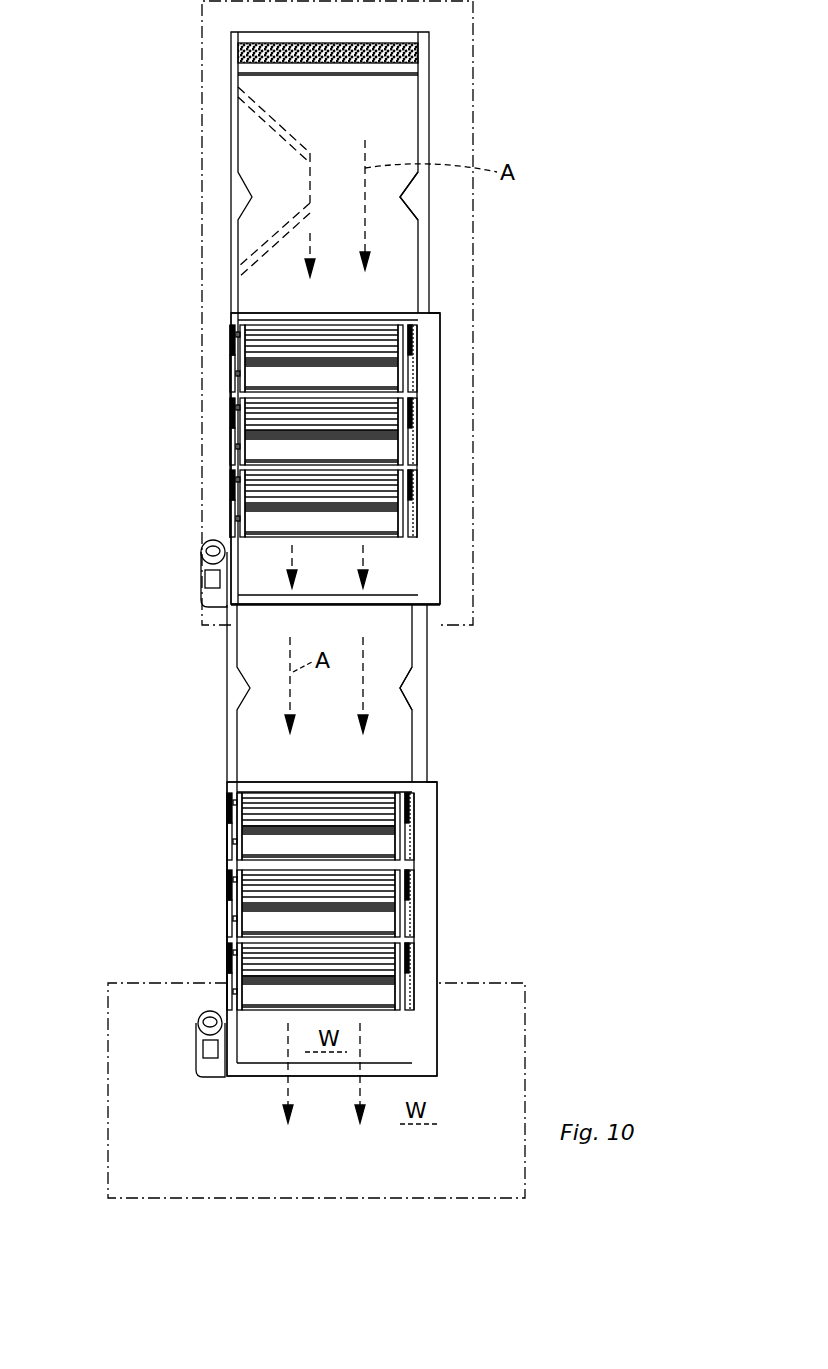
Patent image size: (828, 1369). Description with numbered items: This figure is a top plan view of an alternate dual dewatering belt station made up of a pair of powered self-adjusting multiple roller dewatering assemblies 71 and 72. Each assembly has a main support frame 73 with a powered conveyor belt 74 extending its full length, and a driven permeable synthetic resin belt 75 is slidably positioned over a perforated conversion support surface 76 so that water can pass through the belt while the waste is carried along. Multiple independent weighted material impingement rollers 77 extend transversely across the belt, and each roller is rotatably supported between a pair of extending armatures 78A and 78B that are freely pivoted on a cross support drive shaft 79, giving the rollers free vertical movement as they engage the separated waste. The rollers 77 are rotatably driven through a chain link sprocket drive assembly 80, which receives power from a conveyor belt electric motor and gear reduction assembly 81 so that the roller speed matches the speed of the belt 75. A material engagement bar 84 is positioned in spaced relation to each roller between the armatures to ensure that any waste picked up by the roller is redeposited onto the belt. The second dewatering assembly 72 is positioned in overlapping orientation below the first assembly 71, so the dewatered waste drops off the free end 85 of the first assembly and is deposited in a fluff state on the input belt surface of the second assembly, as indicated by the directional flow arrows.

The powered self-adjusting multiple roller dewatering assembly 71 is at (497, 336).
The second powered multiple roller dewatering assembly 72 is at (497, 903).
The main support frame 73 is at (429, 202).
The powered conveyor belt 74 is at (398, 113).
The driven permeable synthetic resin belt 75 is at (397, 276).
The perforated conversion support surface 76 is at (400, 48).
The weighted material impingement roller 77 is at (272, 998).
The extending armature 78A is at (237, 517).
The extending armature 78B is at (403, 498).
The cross support drive shaft 79 is at (275, 338).
The chain link sprocket drive assembly 80 is at (425, 463).
The conveyor belt electric motor and gear reduction assembly 81 is at (190, 571).
The material engagement bar 84 is at (390, 428).
The free end 85 is at (387, 606).